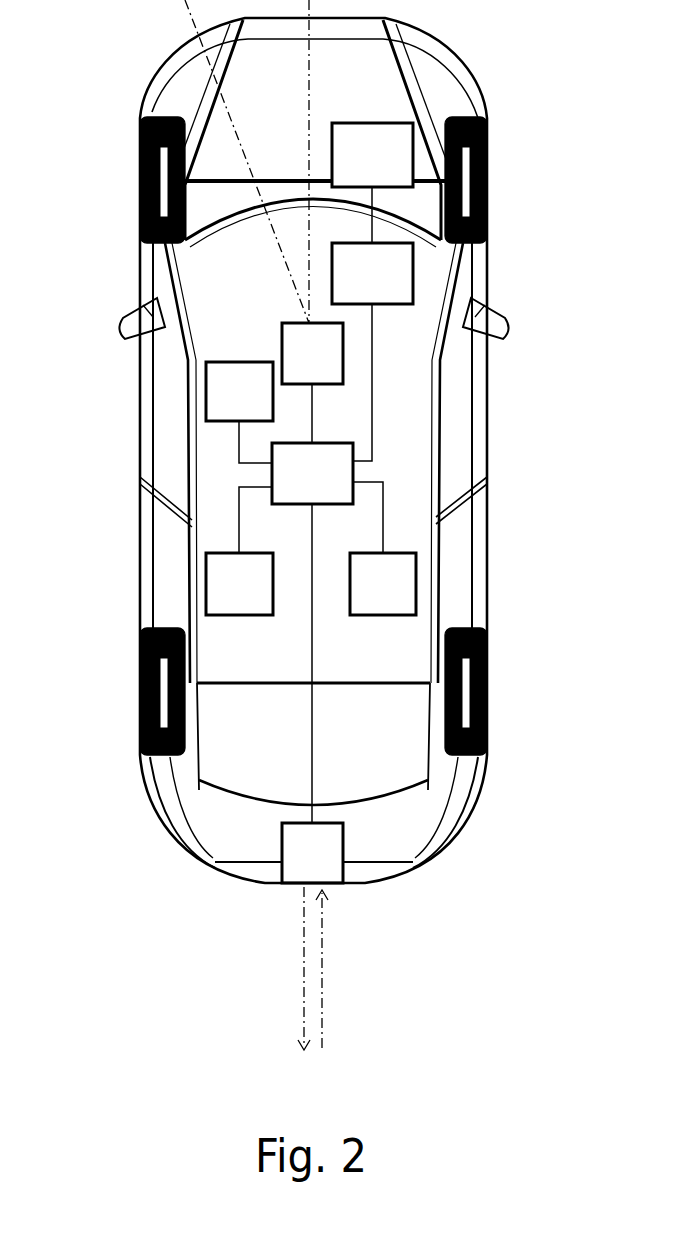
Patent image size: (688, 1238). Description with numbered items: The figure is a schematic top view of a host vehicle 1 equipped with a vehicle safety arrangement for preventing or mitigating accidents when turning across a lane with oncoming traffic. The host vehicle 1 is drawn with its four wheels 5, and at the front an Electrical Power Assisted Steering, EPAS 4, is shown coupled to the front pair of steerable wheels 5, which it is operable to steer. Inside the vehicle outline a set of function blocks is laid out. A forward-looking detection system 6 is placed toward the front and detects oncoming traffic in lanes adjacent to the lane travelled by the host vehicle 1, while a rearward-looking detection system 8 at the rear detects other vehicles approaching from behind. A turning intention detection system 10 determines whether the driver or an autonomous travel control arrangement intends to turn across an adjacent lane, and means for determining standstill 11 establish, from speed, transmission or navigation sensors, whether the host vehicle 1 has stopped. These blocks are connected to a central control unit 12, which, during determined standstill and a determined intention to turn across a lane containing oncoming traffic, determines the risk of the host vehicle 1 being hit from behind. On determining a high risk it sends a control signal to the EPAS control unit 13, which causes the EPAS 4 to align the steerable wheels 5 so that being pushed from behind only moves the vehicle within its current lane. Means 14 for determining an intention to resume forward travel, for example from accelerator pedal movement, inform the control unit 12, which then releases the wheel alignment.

The host vehicle 1 is at (490, 443).
The Electrical Power Assisted Steering (EPAS) 4 is at (365, 168).
The wheels 5 is at (140, 153).
The forward-looking detection system 6 is at (305, 366).
The rearward-looking detection system 8 is at (305, 866).
The turning intention detection system 10 is at (372, 597).
The means for determining standstill 11 is at (228, 597).
The control unit 12 is at (301, 486).
The EPAS control unit 13 is at (361, 286).
The means for determining an intention to resume forward travel 14 is at (228, 404).